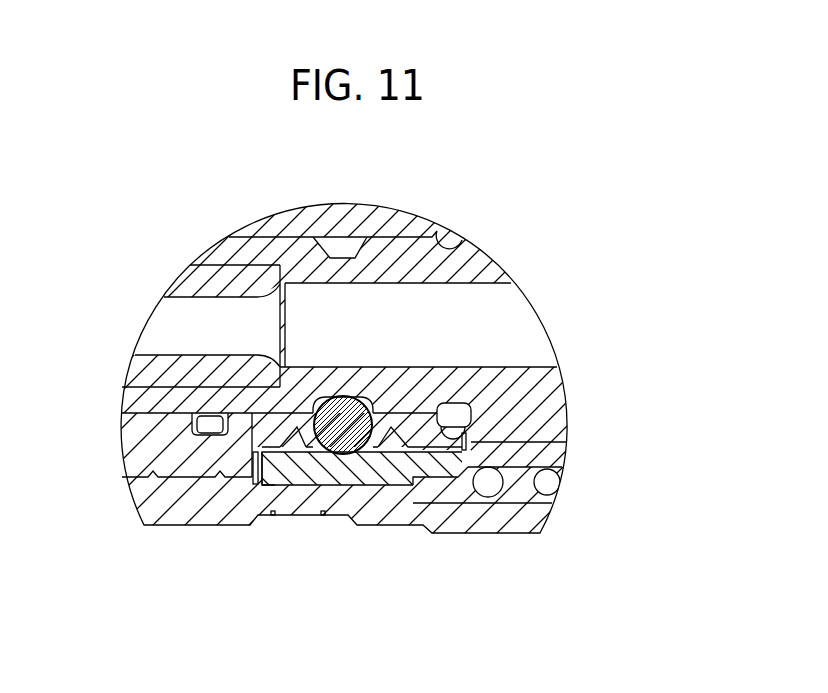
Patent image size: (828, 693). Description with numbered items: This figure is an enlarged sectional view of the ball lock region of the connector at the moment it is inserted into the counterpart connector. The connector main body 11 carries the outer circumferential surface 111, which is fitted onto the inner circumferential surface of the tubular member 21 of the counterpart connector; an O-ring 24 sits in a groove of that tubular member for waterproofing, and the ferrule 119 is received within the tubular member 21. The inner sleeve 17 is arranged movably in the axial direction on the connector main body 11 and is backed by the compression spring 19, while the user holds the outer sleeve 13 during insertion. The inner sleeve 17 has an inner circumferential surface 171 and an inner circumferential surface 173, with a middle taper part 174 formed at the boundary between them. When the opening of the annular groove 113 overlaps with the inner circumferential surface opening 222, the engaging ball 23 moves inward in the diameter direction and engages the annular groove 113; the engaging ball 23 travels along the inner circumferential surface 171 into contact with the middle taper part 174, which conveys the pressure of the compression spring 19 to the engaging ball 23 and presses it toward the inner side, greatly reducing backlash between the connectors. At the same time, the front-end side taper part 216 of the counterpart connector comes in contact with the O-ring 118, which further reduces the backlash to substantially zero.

The connector main body 11 is at (513, 417).
The outer sleeve 13 is at (453, 510).
The inner sleeve 17 is at (422, 478).
The compression spring 19 is at (492, 497).
The tubular member 21 is at (172, 455).
The engaging ball 23 is at (331, 398).
The O-ring 24 is at (210, 422).
The outer circumferential surface 111 is at (256, 478).
The annular groove 113 is at (362, 487).
The O-ring 118 is at (453, 405).
The ferrule 119 is at (195, 287).
The inner circumferential surface 171 is at (281, 457).
The inner circumferential surface 173 is at (383, 448).
The middle taper part 174 is at (335, 453).
The front-end side taper part 216 is at (480, 462).
The inner circumferential surface opening 222 is at (318, 412).